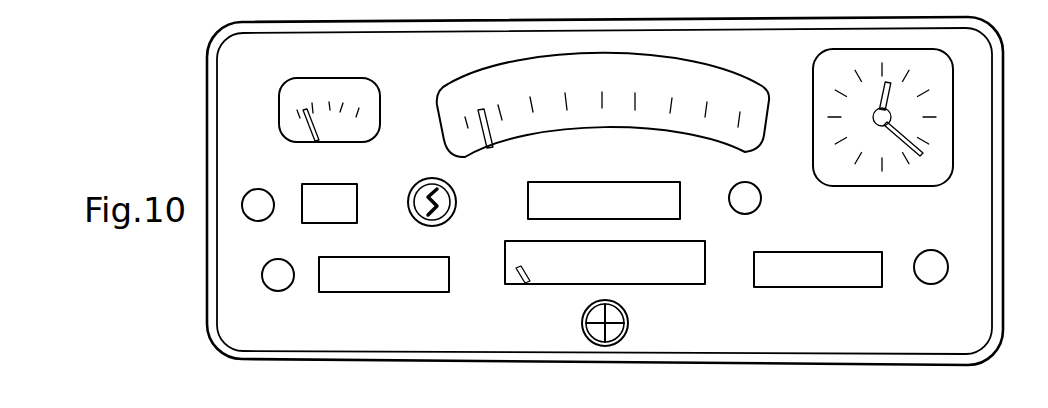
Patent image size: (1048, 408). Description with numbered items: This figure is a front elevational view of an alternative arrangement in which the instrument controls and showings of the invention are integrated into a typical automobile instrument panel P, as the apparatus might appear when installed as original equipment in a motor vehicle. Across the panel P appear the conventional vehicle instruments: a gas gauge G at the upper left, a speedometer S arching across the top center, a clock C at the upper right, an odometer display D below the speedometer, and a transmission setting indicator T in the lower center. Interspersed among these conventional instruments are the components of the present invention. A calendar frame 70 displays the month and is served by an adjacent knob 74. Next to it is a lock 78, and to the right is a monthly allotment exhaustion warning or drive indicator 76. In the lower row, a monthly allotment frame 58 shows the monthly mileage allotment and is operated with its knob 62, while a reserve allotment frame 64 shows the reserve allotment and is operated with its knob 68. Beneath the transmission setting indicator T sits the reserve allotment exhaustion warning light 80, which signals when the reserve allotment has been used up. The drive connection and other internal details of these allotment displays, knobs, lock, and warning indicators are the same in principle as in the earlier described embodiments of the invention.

The instrument panel P is at (228, 74).
The gas gauge G is at (279, 104).
The speedometer S is at (473, 76).
The odometer display D is at (601, 172).
The clock C is at (885, 186).
The transmission setting indicator T is at (546, 287).
The monthly allotment frame 58 is at (372, 295).
The knob 62 is at (270, 290).
The reserve allotment frame 64 is at (810, 290).
The knob 68 is at (939, 283).
The calendar frame 70 is at (337, 184).
The knob 74 is at (257, 188).
The monthly allotment exhaustion warning or drive indicator 76 is at (757, 210).
The lock 78 is at (458, 190).
The reserve allotment exhaustion warning light 80 is at (630, 323).